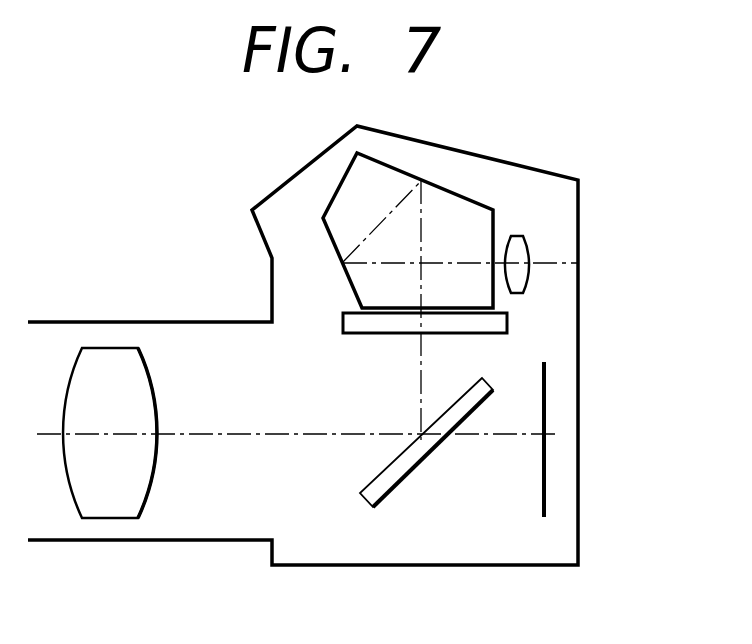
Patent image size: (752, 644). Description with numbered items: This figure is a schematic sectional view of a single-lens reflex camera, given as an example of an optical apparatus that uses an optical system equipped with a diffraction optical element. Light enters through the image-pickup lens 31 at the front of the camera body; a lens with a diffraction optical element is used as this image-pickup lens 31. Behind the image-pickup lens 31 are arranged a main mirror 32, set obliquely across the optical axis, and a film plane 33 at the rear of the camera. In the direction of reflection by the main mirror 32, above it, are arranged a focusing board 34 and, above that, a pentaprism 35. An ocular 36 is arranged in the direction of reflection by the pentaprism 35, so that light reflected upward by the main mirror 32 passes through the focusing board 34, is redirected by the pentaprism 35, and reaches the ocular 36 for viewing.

The image-pickup lens 31 is at (112, 508).
The main mirror 32 is at (388, 497).
The film plane 33 is at (547, 403).
The focusing board 34 is at (507, 325).
The pentaprism 35 is at (335, 197).
The ocular 36 is at (523, 280).